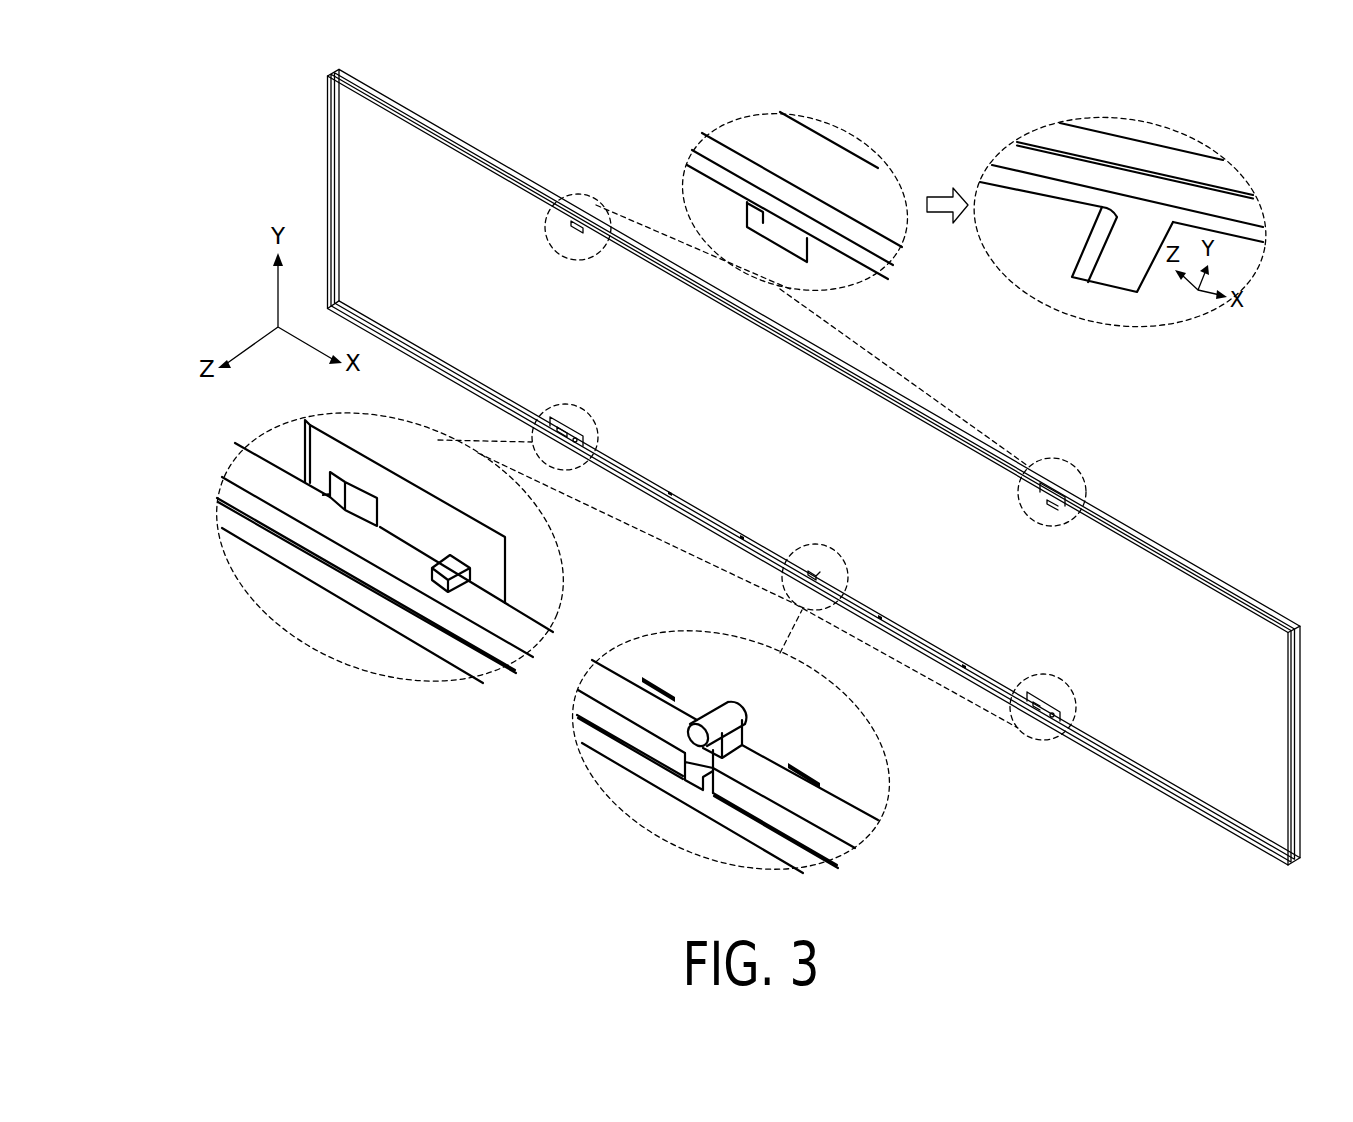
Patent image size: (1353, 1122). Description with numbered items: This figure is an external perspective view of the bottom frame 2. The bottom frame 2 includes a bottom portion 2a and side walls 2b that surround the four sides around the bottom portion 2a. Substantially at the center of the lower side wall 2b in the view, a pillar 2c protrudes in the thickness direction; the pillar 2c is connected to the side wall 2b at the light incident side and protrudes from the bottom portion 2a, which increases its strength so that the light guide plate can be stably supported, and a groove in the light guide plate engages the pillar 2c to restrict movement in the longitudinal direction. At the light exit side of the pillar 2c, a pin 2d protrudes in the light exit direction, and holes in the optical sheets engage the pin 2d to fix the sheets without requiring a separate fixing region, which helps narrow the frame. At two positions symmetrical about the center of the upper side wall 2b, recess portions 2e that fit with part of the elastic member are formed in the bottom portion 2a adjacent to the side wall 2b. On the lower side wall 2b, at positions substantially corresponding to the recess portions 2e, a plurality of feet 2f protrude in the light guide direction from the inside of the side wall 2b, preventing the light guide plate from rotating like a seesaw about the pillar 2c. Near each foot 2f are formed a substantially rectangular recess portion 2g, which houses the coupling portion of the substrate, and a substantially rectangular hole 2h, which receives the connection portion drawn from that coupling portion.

The bottom frame 2 is at (1128, 532).
The bottom portion 2a is at (1162, 582).
The side wall 2b is at (738, 163).
The pillar 2c is at (703, 813).
The pin 2d is at (698, 735).
The recess portion 2e is at (753, 215).
The foot 2f is at (445, 570).
The recess portion 2g is at (485, 545).
The hole 2h is at (357, 505).